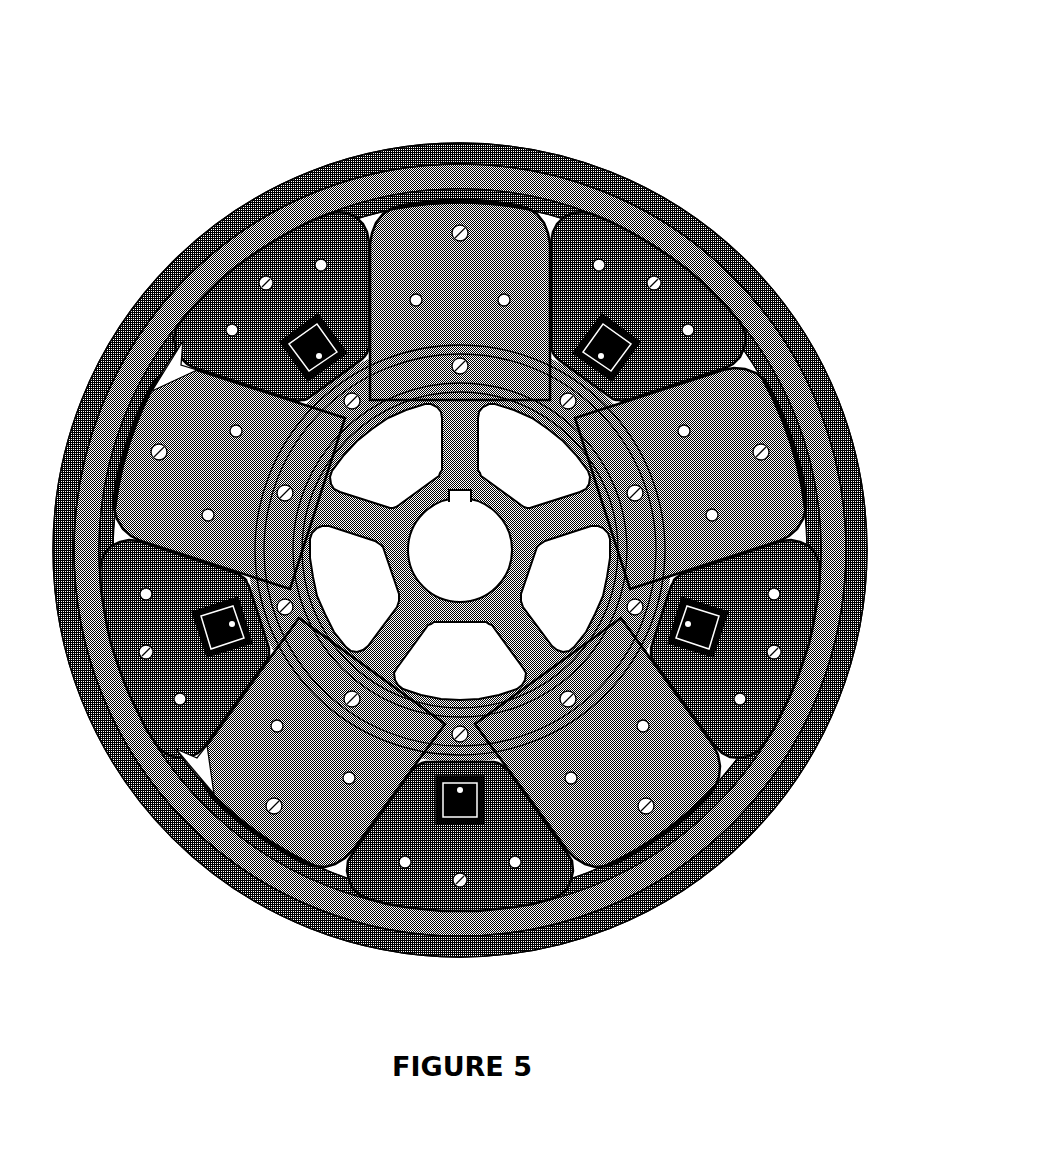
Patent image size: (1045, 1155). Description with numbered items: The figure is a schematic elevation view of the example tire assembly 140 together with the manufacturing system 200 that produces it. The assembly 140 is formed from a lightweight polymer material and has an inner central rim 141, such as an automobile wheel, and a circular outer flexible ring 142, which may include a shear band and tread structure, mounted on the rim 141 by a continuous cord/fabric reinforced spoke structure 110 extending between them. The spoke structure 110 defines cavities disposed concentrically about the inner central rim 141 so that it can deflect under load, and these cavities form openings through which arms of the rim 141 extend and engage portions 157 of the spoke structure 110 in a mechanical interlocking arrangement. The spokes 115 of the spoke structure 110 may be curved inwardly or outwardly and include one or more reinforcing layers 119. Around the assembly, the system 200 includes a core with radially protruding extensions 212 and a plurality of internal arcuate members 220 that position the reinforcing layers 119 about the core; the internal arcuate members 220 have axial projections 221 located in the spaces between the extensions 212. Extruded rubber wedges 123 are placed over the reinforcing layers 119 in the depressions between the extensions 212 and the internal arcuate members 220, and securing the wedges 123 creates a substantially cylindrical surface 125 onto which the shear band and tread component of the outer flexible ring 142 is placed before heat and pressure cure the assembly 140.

The tire assembly 140 is at (700, 133).
The outer flexible ring 142 is at (782, 348).
The reinforcing layer 119 is at (812, 492).
The spoke structure 110 is at (541, 218).
The radially protruding extension 212 is at (683, 754).
The system 200 is at (388, 212).
The spoke 115 is at (377, 293).
The internal arcuate member 220 is at (700, 285).
The axial projection 221 is at (245, 260).
The portion of the spoke structure 157 is at (557, 870).
The extruded rubber wedge 123 is at (173, 338).
The cylindrical surface 125 is at (158, 750).
The inner central rim 141 is at (432, 597).